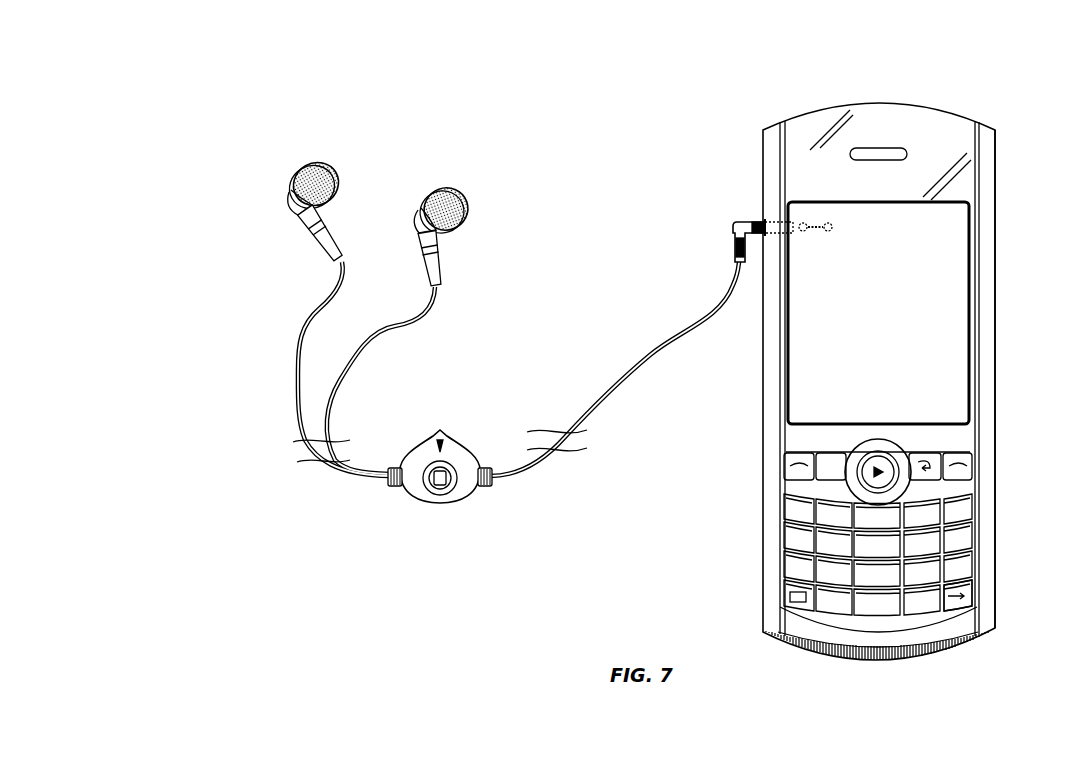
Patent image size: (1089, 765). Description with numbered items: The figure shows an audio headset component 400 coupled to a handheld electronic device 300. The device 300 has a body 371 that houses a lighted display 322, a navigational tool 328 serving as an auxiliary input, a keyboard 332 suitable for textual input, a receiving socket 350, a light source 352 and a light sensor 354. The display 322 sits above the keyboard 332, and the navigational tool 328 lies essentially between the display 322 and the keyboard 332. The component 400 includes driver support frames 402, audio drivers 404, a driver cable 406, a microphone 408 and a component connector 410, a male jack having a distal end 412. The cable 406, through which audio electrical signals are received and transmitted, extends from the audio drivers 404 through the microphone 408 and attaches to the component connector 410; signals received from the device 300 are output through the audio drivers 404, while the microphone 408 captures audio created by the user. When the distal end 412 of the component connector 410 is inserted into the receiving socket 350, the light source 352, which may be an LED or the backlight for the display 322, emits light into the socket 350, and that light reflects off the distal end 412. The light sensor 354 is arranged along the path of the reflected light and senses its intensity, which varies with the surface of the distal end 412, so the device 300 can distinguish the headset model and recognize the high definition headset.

The handheld electronic device 300 is at (965, 65).
The lighted display 322 is at (945, 312).
The navigational tool 328 is at (787, 512).
The keyboard 332 is at (952, 610).
The receiving socket 350 is at (775, 222).
The light source 352 is at (830, 227).
The light sensor 354 is at (803, 227).
The body 371 is at (998, 173).
The component 400 is at (565, 152).
The driver support frame 402 is at (310, 241).
The audio driver 404 is at (337, 163).
The driver cable 406 is at (290, 378).
The microphone 408 is at (482, 395).
The component connector 410 is at (728, 227).
The distal end 412 is at (765, 220).